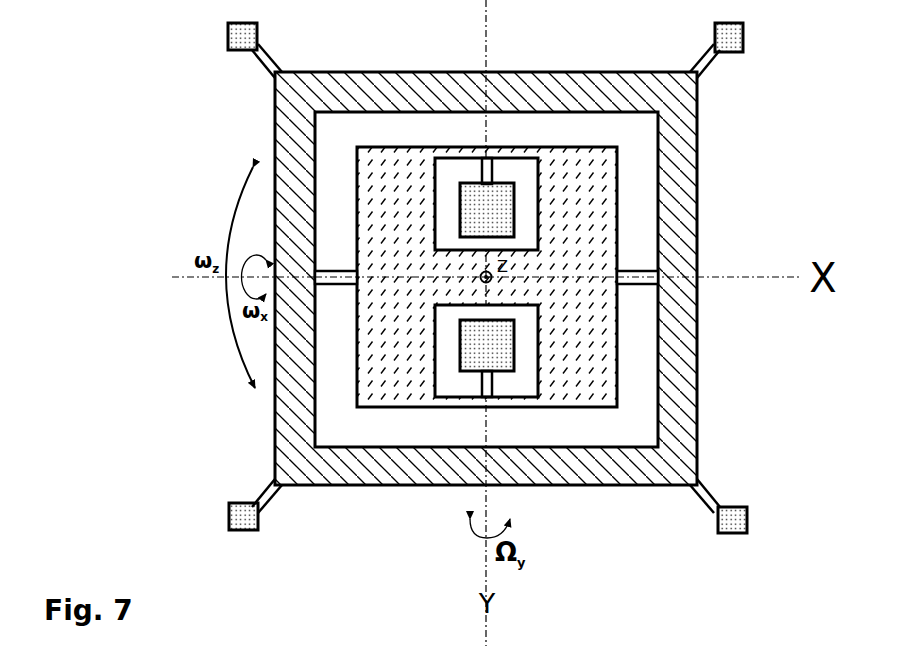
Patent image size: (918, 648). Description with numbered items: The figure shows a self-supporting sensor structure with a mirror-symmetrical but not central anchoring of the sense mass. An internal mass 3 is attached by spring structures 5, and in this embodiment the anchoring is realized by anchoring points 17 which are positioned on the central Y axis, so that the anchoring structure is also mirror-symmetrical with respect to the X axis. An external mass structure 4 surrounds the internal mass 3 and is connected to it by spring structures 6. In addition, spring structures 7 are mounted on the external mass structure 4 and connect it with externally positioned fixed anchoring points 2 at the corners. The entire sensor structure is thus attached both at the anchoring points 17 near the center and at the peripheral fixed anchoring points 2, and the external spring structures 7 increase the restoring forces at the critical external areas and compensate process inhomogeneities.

The fixed anchoring point 2 is at (258, 28).
The internal mass 3 is at (618, 183).
The external mass structure 4 is at (698, 428).
The spring structure 5 is at (480, 165).
The spring structure 6 is at (335, 286).
The spring structure 7 is at (272, 55).
The anchoring point 17 is at (505, 182).